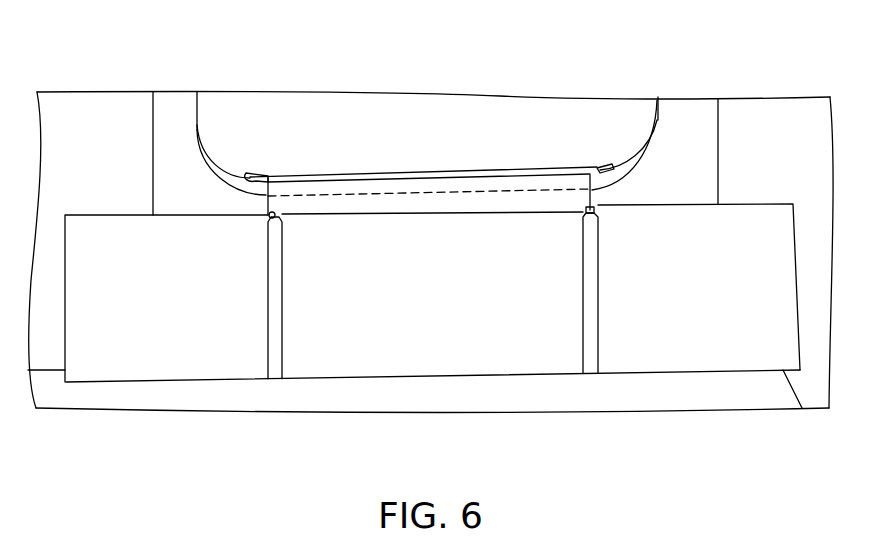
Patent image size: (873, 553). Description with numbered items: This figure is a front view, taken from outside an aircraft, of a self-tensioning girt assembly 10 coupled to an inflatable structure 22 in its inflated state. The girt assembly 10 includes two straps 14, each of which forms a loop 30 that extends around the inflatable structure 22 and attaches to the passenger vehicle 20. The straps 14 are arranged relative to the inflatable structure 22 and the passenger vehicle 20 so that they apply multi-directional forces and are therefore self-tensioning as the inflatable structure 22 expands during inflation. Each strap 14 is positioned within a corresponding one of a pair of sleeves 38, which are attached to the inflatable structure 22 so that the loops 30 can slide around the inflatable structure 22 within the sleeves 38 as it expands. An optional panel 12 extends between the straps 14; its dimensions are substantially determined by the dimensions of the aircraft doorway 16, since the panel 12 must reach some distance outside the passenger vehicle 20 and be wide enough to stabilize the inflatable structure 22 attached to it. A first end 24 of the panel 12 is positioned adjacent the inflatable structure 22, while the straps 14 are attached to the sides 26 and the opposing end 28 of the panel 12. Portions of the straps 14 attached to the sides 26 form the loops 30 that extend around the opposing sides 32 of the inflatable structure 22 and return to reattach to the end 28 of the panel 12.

The self-tensioning girt assembly 10 is at (245, 142).
The panel 12 is at (513, 197).
The strap 14 is at (266, 218).
The doorway 16 is at (658, 103).
The passenger vehicle 20 is at (808, 103).
The inflatable structure 22 is at (432, 360).
The first end 24 is at (400, 215).
The side 26 is at (270, 176).
The opposing end 28 is at (418, 168).
The loop 30 is at (588, 190).
The opposing side 32 is at (108, 320).
The sleeve 38 is at (272, 318).